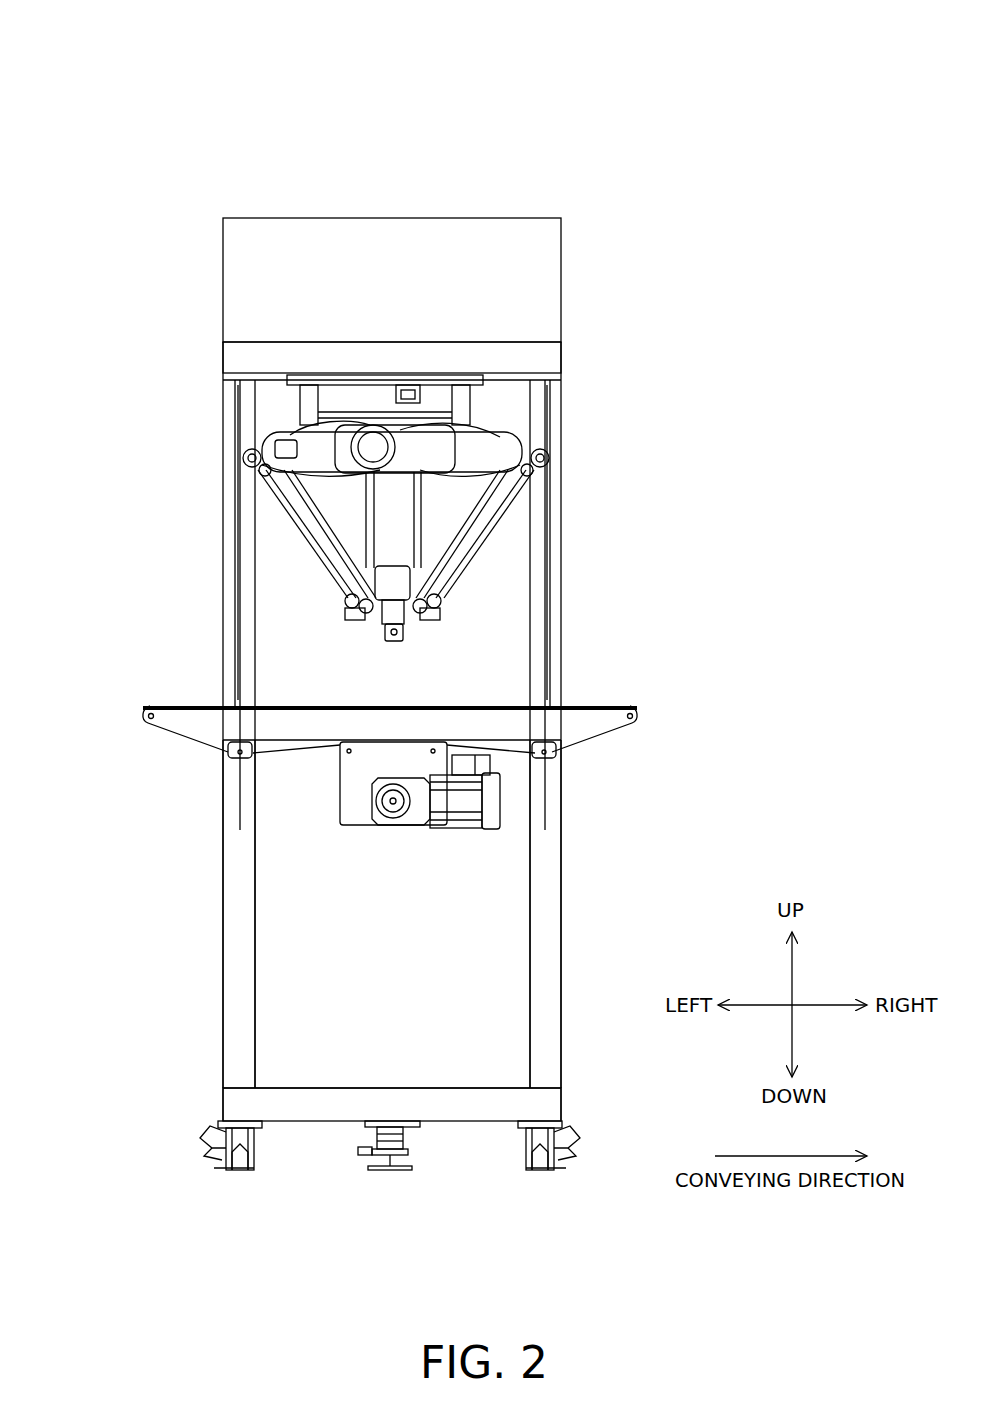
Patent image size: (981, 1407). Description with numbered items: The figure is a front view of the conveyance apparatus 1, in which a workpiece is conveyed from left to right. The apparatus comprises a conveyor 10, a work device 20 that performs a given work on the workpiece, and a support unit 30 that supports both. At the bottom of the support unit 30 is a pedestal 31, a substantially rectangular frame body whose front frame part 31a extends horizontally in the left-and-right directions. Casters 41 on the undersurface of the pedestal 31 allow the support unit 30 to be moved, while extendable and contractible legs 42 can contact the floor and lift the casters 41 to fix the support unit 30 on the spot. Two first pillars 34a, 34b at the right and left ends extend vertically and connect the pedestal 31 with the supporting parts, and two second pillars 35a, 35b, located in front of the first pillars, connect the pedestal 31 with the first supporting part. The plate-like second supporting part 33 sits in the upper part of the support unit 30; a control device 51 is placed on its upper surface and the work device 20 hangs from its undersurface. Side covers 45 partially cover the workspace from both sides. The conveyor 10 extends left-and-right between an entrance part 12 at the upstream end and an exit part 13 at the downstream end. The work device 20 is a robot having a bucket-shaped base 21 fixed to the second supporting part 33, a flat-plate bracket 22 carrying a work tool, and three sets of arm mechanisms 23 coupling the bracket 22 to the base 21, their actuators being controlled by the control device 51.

The conveyance apparatus 1 is at (707, 127).
The conveyor 10 is at (165, 732).
The entrance part 12 is at (143, 707).
The exit part 13 is at (643, 707).
The work device 20 is at (487, 598).
The base 21 is at (300, 404).
The bracket 22 is at (372, 620).
The arm mechanisms 23 is at (365, 536).
The support unit 30 is at (565, 430).
The pedestal 31 is at (319, 1048).
The frame part 31a is at (333, 1100).
The second supporting part 33 is at (235, 352).
The first pillar 34a is at (562, 548).
The first pillar 34b is at (222, 548).
The second pillar 35a is at (562, 883).
The second pillar 35b is at (222, 883).
The casters 41 is at (225, 1172).
The legs 42 is at (389, 1172).
The side cover 45 is at (240, 492).
The control device 51 is at (333, 217).